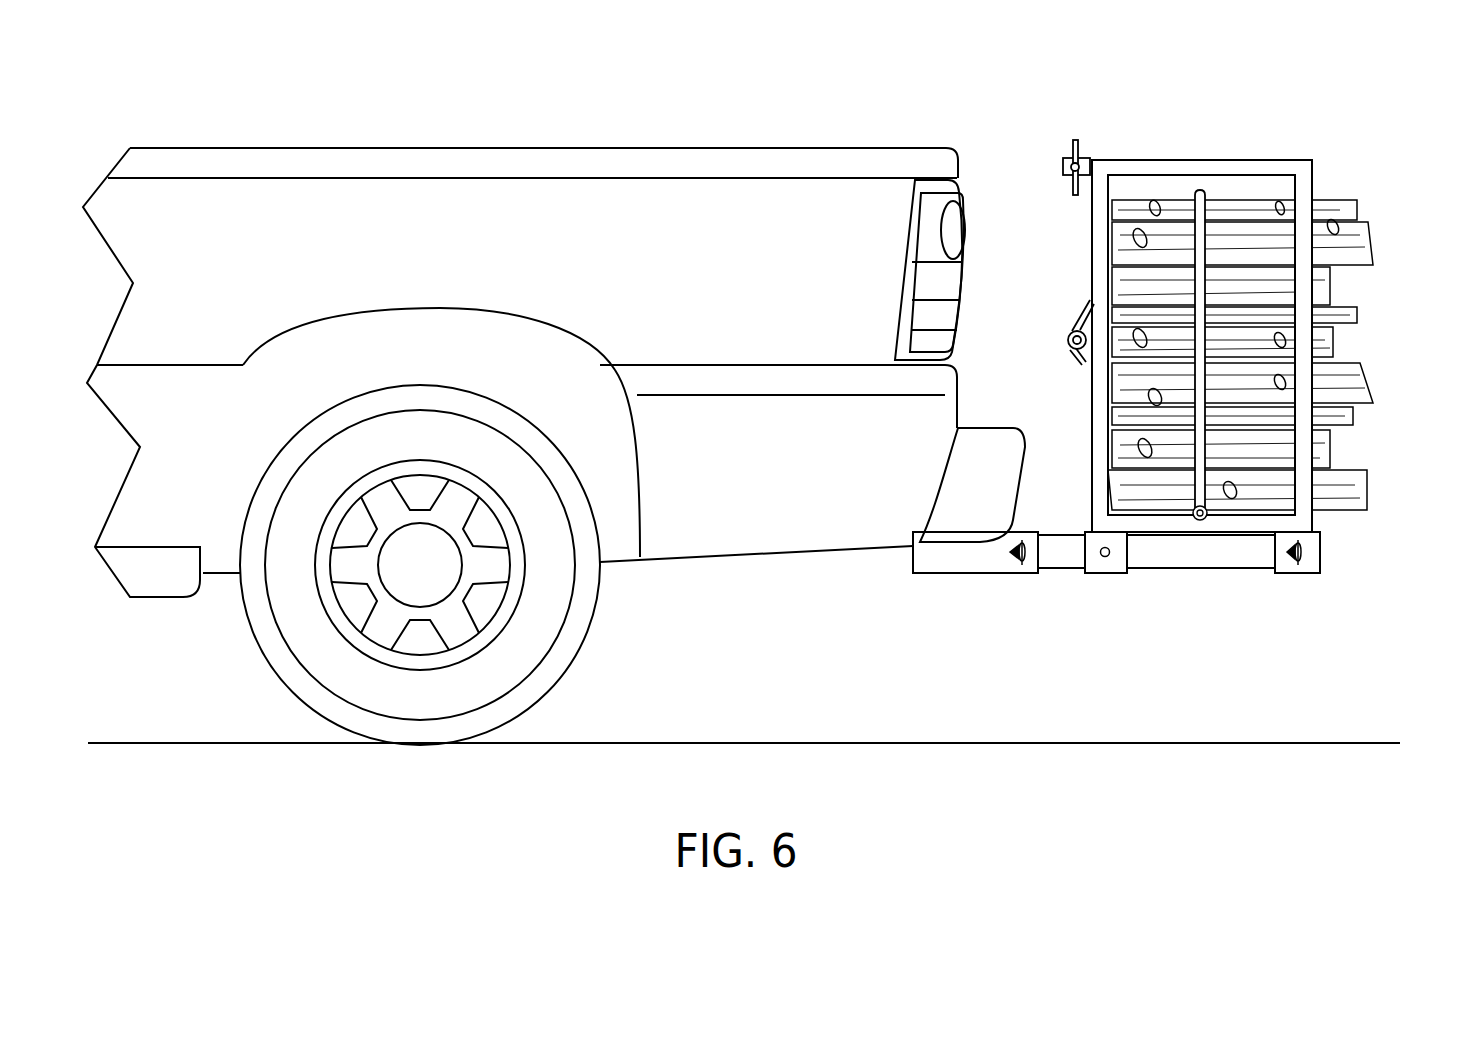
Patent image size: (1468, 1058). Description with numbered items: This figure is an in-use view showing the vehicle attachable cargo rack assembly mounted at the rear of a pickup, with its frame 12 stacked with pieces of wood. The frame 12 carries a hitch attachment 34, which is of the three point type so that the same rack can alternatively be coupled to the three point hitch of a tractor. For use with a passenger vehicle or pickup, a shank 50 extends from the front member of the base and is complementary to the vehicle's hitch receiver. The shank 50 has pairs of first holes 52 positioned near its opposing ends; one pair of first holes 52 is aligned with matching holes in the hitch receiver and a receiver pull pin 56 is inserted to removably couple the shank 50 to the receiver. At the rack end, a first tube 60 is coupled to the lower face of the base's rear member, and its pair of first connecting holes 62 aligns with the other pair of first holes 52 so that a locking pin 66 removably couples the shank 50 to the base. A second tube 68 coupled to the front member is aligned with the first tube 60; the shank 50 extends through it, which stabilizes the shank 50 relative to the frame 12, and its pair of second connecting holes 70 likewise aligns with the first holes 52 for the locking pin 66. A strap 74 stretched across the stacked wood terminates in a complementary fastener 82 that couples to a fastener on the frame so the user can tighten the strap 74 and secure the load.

The frame 12 is at (1253, 525).
The hitch attachment 34 is at (1062, 315).
The shank 50 is at (1175, 553).
The first holes 52 is at (1017, 551).
The receiver pull pin 56 is at (1022, 560).
The first tube 60 is at (1317, 560).
The first connecting holes 62 is at (1303, 547).
The locking pin 66 is at (1307, 555).
The second tube 68 is at (1092, 570).
The second connecting holes 70 is at (1108, 555).
The strap 74 is at (1200, 240).
The complementary fastener 82 is at (1205, 520).